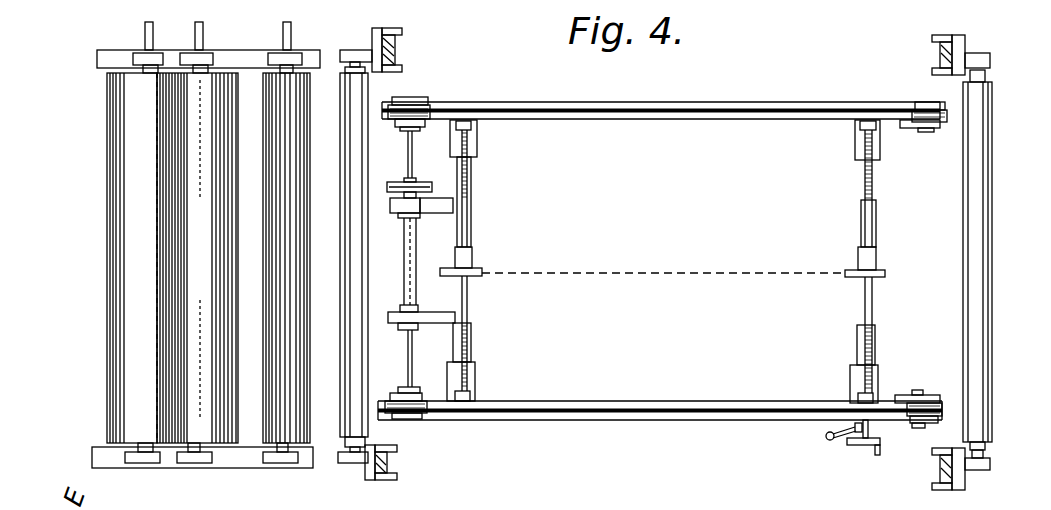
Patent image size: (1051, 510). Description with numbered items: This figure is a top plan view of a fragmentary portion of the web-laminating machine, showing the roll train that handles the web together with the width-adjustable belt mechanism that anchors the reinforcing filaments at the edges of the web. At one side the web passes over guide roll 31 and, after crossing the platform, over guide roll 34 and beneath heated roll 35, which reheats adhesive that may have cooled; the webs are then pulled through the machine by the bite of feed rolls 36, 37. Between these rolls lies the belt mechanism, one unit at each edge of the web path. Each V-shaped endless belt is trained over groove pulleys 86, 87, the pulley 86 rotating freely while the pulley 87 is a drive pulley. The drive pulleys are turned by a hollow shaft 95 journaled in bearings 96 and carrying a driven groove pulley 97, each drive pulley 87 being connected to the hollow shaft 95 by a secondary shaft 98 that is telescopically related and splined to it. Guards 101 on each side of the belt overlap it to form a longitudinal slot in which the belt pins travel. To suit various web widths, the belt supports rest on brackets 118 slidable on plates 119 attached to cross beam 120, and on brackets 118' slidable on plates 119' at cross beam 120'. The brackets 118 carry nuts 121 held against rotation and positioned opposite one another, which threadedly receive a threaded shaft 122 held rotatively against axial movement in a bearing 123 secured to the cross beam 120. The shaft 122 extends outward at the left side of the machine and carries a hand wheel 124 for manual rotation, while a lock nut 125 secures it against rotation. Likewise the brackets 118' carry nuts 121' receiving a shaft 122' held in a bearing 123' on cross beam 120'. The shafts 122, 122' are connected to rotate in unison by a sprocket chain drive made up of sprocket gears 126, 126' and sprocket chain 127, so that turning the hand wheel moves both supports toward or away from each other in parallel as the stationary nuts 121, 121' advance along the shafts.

The guide roll 31 is at (990, 355).
The guide roll 34 is at (340, 425).
The heated roll 35 is at (297, 362).
The feed roll 36 is at (112, 375).
The feed roll 37 is at (213, 433).
The groove pulley 86 is at (937, 108).
The drive pulley 87 is at (430, 100).
The hollow shaft 95 is at (413, 265).
The bearing 96 is at (393, 210).
The driven groove pulley 97 is at (425, 187).
The secondary shaft 98 is at (408, 152).
The guard 101 is at (670, 396).
The bracket 118 is at (869, 261).
The bracket 118' is at (505, 260).
The plate 119 is at (842, 261).
The plate 119' is at (500, 260).
The cross beam 120 is at (849, 223).
The cross beam 120' is at (495, 202).
The nut 121 is at (838, 262).
The nut 121' is at (496, 261).
The threaded shaft 122 is at (892, 345).
The threaded shaft 122' is at (493, 341).
The bearing 123 is at (838, 256).
The bearing 123' is at (496, 248).
The hand wheel 124 is at (860, 447).
The lock nut 125 is at (828, 438).
The sprocket gear 126 is at (851, 290).
The sprocket gear 126' is at (497, 260).
The sprocket chain 127 is at (718, 274).